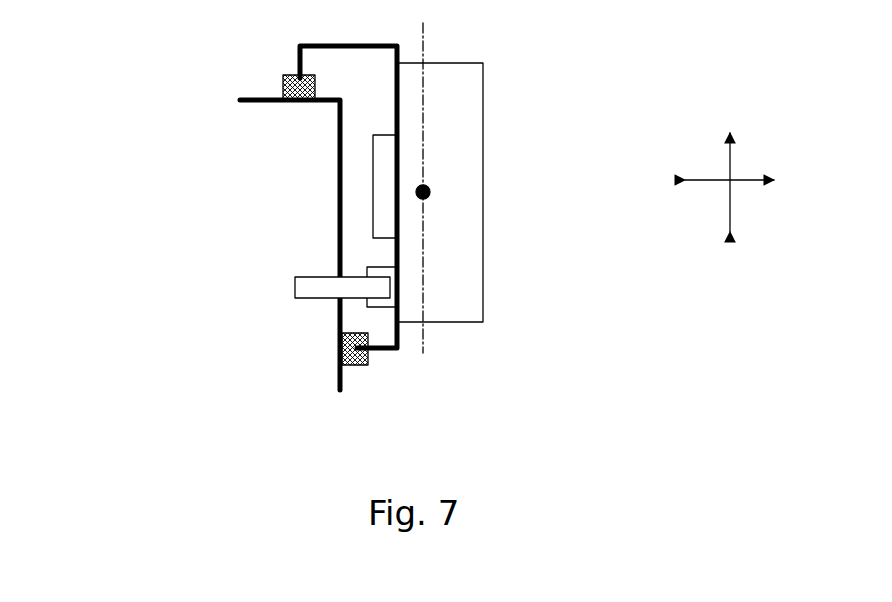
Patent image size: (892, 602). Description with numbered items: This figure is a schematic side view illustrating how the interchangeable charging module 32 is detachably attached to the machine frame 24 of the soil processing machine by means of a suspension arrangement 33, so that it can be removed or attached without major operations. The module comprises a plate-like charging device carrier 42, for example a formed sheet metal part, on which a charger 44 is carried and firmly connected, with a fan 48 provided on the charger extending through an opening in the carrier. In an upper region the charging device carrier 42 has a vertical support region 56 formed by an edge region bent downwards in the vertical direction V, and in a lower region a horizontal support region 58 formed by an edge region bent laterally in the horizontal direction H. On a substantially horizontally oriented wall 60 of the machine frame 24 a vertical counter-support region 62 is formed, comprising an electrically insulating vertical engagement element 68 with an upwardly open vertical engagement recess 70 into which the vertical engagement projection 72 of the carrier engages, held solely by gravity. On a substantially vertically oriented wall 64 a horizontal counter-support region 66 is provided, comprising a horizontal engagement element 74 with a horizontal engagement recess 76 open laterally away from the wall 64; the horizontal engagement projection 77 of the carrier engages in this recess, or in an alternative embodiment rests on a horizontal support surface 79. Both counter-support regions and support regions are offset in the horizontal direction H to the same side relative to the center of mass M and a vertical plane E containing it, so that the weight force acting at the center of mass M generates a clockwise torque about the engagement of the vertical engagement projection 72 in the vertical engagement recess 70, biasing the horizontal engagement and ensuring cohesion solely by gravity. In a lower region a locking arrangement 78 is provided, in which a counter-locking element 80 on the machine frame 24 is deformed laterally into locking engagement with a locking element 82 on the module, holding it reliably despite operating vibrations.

The machine frame 24 is at (337, 390).
The interchangeable charging module 32 is at (570, 60).
The suspension arrangement 33 is at (228, 168).
The charging device carrier 42 is at (398, 102).
The charger 44 is at (457, 63).
The fan 48 is at (340, 183).
The vertical support region 56 is at (317, 62).
The horizontal support region 58 is at (407, 345).
The wall 60 is at (243, 100).
The vertical counter-support region 62 is at (295, 122).
The wall 64 is at (338, 202).
The horizontal counter-support region 66 is at (327, 365).
The vertical engagement element 68 is at (317, 78).
The vertical engagement recess 70 is at (290, 103).
The vertical engagement projection 72 is at (288, 74).
The horizontal engagement element 74 is at (340, 342).
The horizontal engagement recess 76 is at (357, 365).
The horizontal engagement projection 77 is at (370, 353).
The locking arrangement 78 is at (407, 292).
The horizontal support surface 79 is at (367, 357).
The counter-locking element 80 is at (307, 287).
The locking element 82 is at (390, 277).
The center of mass M is at (430, 188).
The vertical plane E is at (423, 220).
The vertical direction V is at (730, 147).
The horizontal direction H is at (752, 183).